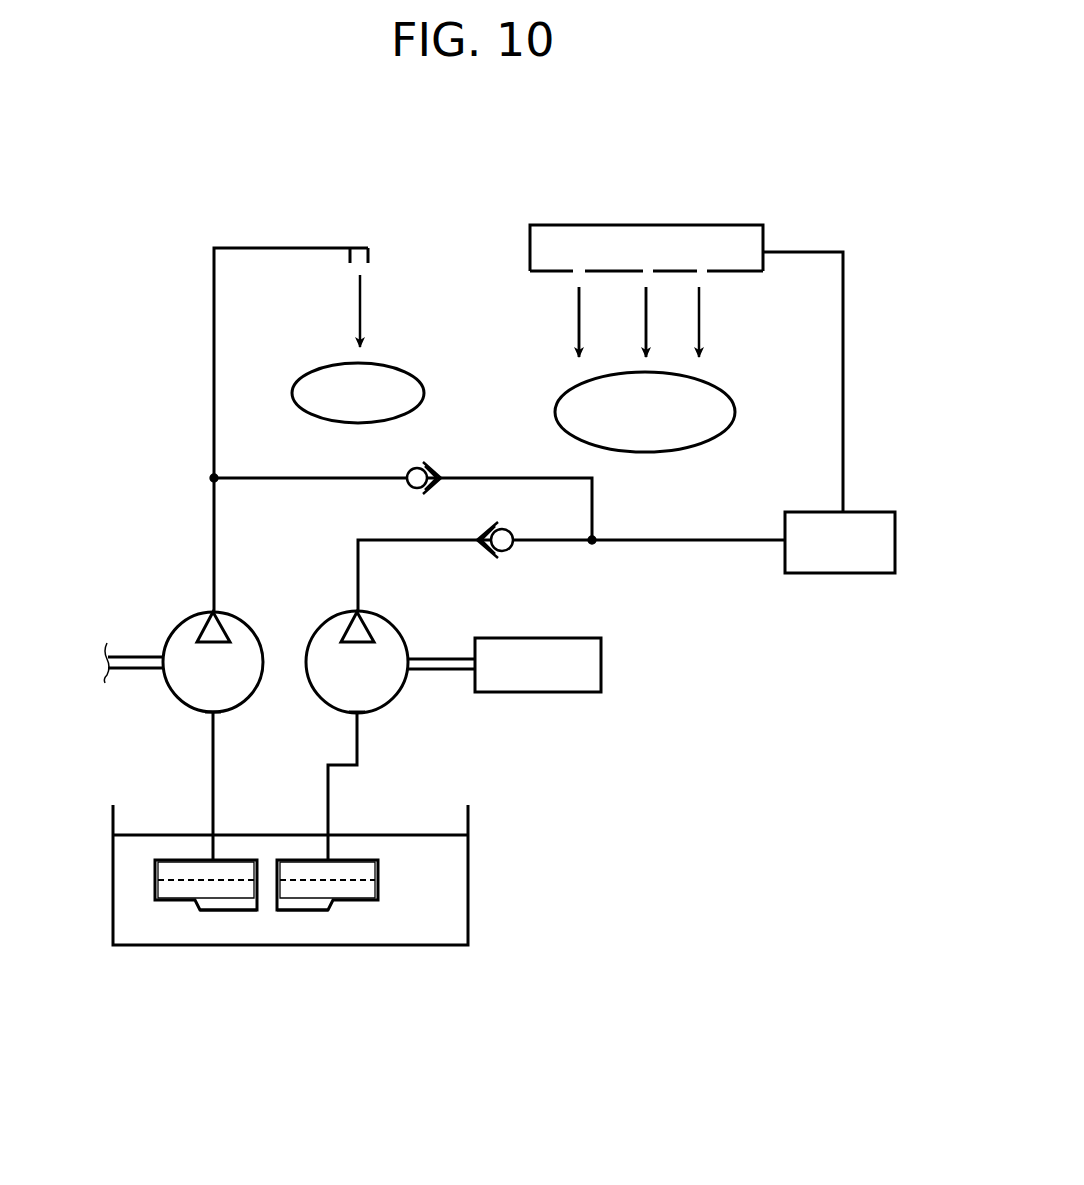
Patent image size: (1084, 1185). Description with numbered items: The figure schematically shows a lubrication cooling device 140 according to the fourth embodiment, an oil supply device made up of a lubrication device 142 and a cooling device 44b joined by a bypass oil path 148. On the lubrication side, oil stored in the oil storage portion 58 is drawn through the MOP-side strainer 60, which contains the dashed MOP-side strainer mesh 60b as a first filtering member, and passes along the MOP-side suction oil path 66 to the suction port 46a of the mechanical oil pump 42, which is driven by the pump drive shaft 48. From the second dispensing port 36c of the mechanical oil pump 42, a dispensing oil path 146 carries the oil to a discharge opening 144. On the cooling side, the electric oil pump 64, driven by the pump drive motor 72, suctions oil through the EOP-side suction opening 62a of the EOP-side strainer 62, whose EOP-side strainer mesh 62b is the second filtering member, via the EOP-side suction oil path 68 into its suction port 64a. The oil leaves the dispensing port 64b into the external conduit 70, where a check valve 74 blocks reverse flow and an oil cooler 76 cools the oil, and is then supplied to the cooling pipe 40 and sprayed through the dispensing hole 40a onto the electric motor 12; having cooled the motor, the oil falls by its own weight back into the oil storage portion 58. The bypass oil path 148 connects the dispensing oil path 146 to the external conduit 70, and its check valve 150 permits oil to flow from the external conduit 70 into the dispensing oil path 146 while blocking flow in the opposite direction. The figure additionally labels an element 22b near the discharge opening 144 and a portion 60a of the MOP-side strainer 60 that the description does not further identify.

The electric motor 12 is at (710, 412).
The lubricated component 22b is at (385, 385).
The second dispensing port 36c is at (210, 608).
The cooling pipe 40 is at (606, 238).
The dispensing hole 40a is at (659, 261).
The mechanical oil pump 42 is at (183, 650).
The cooling device 44b is at (882, 316).
The suction port 46a is at (217, 717).
The pump drive shaft 48 is at (135, 668).
The oil storage portion 58 is at (424, 910).
The MOP-side strainer 60 is at (185, 850).
The strainer outlet portion 60a is at (225, 910).
The MOP-side strainer mesh 60b is at (168, 883).
The EOP-side strainer 62 is at (359, 853).
The EOP-side suction opening 62a is at (297, 912).
The EOP-side strainer mesh 62b is at (345, 883).
The electric oil pump 64 is at (388, 648).
The suction port 64a is at (360, 717).
The dispensing port 64b is at (352, 608).
The MOP-side suction oil path 66 is at (212, 760).
The EOP-side suction oil path 68 is at (325, 820).
The external conduit 70 is at (630, 543).
The pump drive motor 72 is at (572, 648).
The check valve 74 is at (507, 570).
The oil cooler 76 is at (848, 555).
The lubrication cooling device 140 is at (480, 152).
The lubrication device 142 is at (113, 429).
The discharge opening 144 is at (378, 273).
The dispensing oil path 146 is at (213, 375).
The bypass oil path 148 is at (262, 478).
The check valve 150 is at (435, 458).